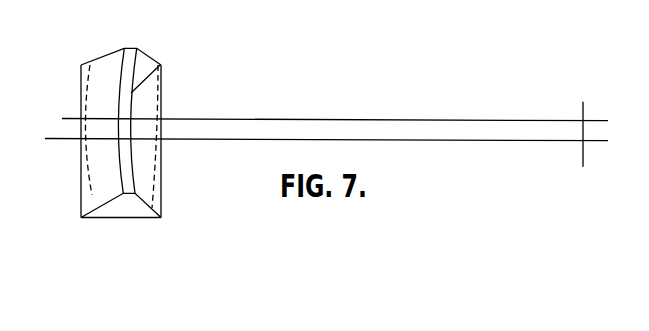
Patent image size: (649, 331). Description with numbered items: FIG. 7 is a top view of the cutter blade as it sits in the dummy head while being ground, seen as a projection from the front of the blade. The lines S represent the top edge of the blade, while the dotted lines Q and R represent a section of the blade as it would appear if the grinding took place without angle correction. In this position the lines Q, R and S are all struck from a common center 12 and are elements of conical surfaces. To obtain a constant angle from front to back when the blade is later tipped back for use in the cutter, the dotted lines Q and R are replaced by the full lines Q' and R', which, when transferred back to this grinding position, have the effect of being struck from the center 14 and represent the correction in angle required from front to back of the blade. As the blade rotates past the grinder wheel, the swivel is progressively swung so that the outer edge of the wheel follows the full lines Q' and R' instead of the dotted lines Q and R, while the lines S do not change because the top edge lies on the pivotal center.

The dotted section line R is at (50, 141).
The full corrected line R' is at (49, 129).
The top edge lines S is at (118, 78).
The dotted section line Q is at (196, 136).
The full corrected line Q' is at (193, 154).
The common center 12 is at (583, 121).
The correction center 14 is at (583, 141).